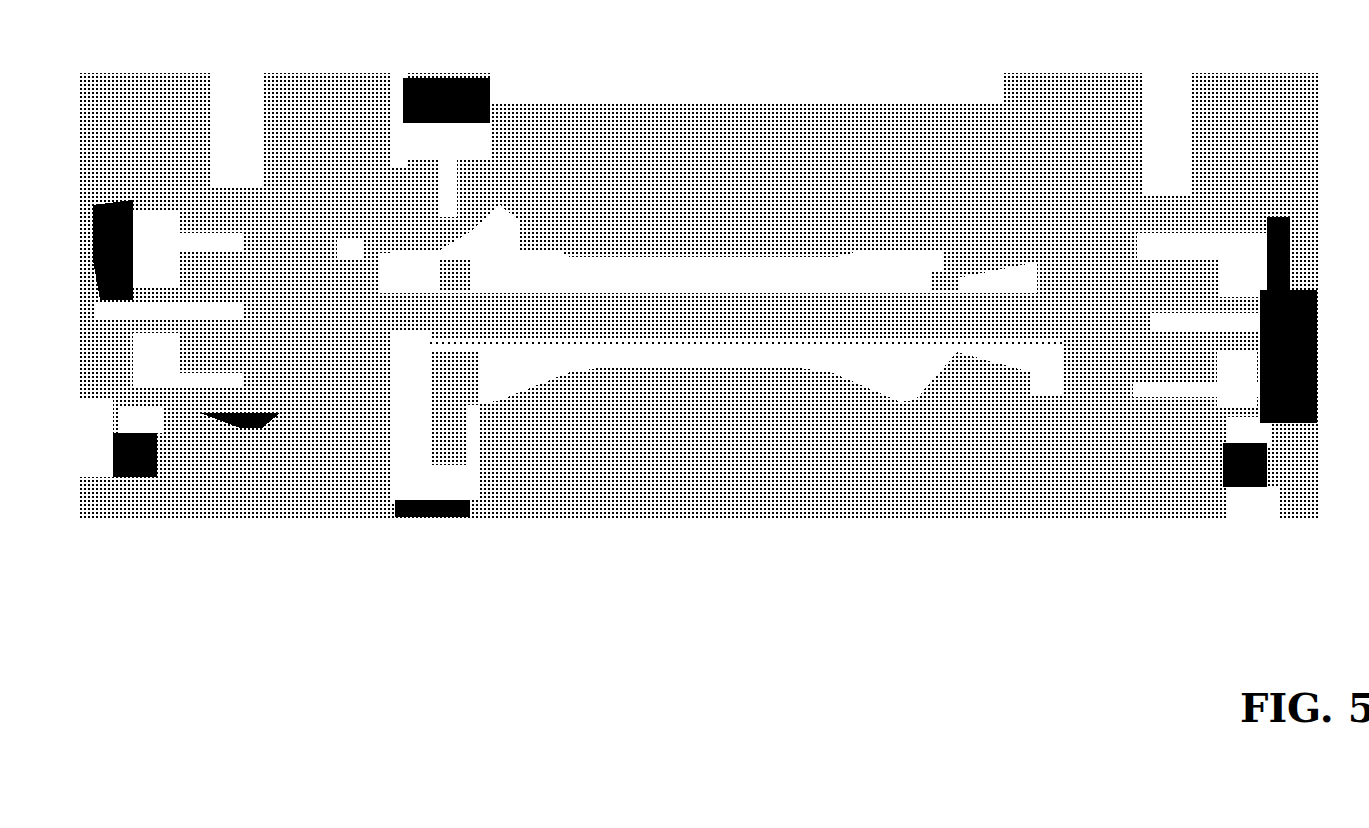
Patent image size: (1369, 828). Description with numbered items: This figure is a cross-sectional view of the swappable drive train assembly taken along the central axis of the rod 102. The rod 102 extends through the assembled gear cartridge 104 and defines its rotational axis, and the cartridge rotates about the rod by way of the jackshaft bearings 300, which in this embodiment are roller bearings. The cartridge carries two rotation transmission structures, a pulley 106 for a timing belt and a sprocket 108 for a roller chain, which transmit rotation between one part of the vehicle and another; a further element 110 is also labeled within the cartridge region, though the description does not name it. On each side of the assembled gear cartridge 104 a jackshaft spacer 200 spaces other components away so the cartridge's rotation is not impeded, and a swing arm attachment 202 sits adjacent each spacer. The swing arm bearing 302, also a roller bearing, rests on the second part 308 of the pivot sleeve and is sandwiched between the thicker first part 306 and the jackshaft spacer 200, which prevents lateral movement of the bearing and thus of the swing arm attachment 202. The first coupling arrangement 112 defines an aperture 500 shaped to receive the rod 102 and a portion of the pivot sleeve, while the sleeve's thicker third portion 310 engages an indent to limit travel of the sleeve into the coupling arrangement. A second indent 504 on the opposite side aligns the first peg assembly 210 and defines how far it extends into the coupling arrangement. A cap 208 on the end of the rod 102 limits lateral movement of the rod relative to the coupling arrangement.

The rod 102 is at (705, 320).
The assembled gear cartridge 104 is at (748, 392).
The pulley 106 is at (423, 487).
The sprocket 108 is at (948, 200).
The roller 110 is at (712, 258).
The first coupling arrangement 112 is at (241, 401).
The jackshaft spacer 200 is at (368, 345).
The swing arm attachment 202 is at (322, 140).
The cap 208 is at (110, 274).
The first peg assembly 210 is at (143, 345).
The jackshaft bearing 300 is at (465, 273).
The swing arm bearing 302 is at (335, 388).
The first part 306 is at (341, 281).
The second part 308 is at (321, 281).
The third portion 310 is at (297, 259).
The aperture 500 is at (300, 369).
The second indent 504 is at (175, 212).